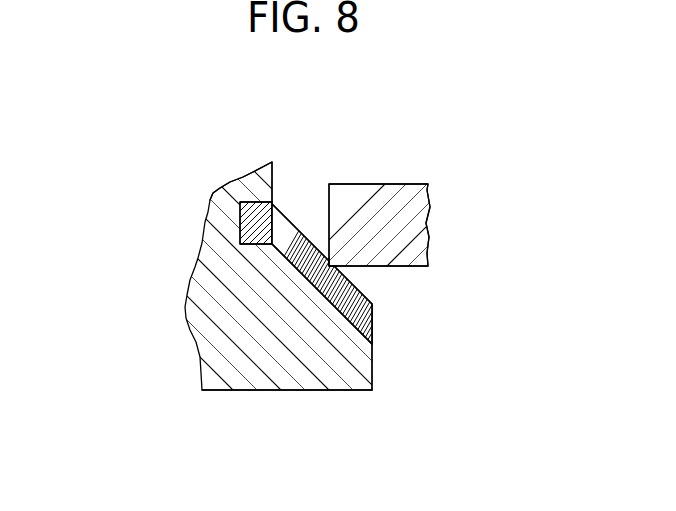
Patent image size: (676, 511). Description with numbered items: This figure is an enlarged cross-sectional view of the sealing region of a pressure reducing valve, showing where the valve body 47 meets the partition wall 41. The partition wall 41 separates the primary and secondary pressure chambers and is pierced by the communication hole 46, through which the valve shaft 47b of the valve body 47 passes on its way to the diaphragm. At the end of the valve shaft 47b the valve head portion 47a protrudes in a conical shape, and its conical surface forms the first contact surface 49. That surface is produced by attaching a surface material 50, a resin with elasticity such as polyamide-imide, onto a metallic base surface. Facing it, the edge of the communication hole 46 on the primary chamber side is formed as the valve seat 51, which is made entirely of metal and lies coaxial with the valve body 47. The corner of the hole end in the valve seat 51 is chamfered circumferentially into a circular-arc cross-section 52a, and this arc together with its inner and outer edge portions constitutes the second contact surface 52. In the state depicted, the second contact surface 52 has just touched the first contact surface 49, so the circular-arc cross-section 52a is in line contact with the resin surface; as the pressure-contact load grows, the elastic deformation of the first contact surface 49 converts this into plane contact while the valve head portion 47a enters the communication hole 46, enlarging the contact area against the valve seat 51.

The partition wall 41 is at (393, 200).
The communication hole 46 is at (328, 198).
The valve body 47 is at (232, 390).
The valve head portion 47a is at (292, 350).
The valve shaft 47b is at (258, 181).
The first contact surface 49 is at (300, 233).
The surface material 50 is at (373, 322).
The valve seat 51 is at (338, 257).
The second contact surface 52 is at (300, 233).
The circular-arc cross-section 52a is at (318, 280).